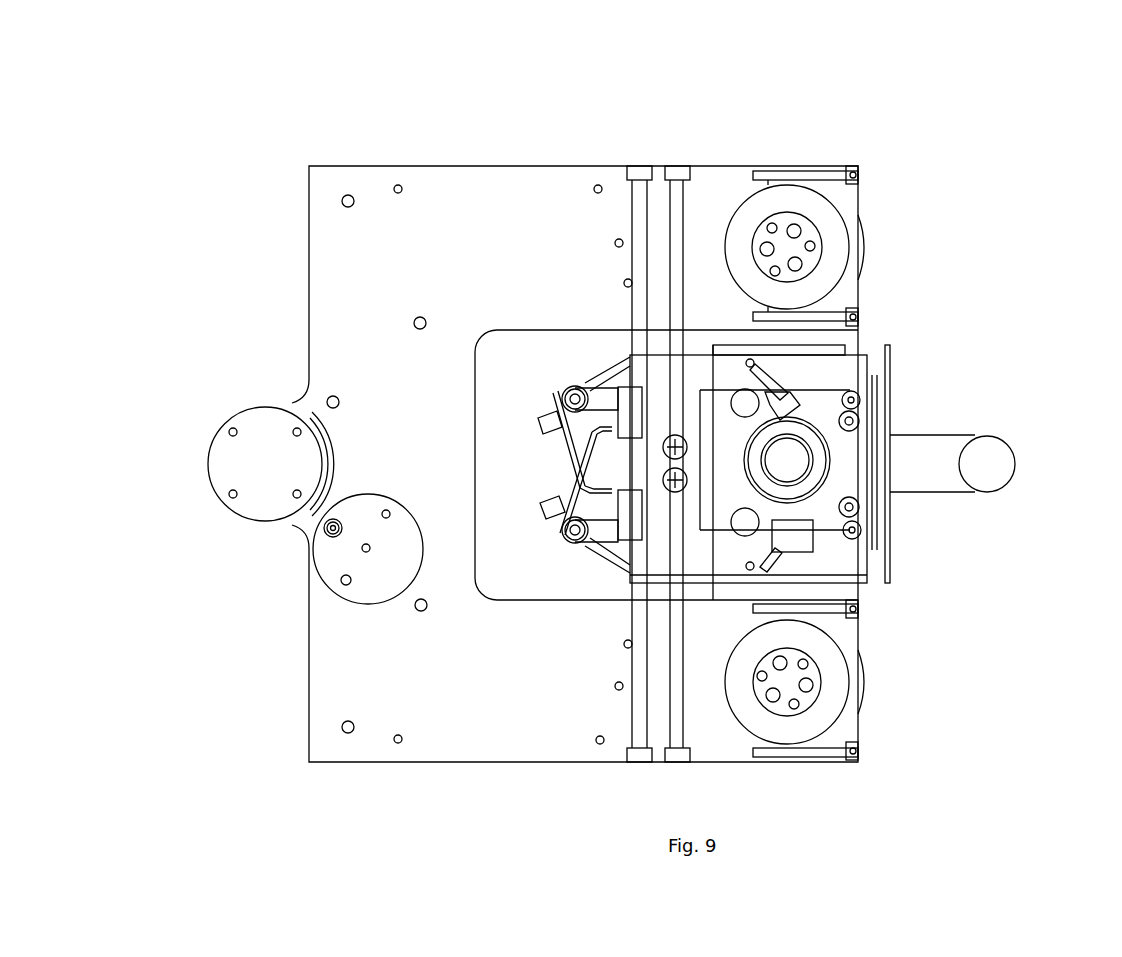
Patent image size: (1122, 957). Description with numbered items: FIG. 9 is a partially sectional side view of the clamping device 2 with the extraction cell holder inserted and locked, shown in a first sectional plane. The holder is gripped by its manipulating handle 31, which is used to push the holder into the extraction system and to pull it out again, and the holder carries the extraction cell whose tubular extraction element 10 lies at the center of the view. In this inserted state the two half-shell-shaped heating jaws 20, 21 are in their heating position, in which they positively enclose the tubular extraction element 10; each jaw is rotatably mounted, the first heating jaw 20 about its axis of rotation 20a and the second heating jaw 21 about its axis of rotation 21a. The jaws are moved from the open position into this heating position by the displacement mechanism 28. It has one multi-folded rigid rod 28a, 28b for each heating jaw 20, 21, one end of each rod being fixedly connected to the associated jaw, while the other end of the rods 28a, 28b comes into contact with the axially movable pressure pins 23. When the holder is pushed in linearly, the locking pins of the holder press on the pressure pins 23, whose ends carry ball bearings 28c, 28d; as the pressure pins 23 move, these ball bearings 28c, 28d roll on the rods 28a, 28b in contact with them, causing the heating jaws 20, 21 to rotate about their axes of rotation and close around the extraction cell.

The clamping device 2 is at (249, 123).
The tubular extraction element 10 is at (790, 458).
The heating jaw 20 is at (808, 408).
The axis of rotation 20a is at (675, 447).
The heating jaw 21 is at (830, 505).
The axis of rotation 21a is at (675, 480).
The pressure pins 23 is at (575, 392).
The displacement mechanism 28 is at (495, 395).
The multi-folded rigid rod 28a is at (522, 440).
The multi-folded rigid rod 28b is at (560, 481).
The ball bearing 28c is at (595, 403).
The ball bearing 28d is at (585, 540).
The manipulating handle 31 is at (988, 452).